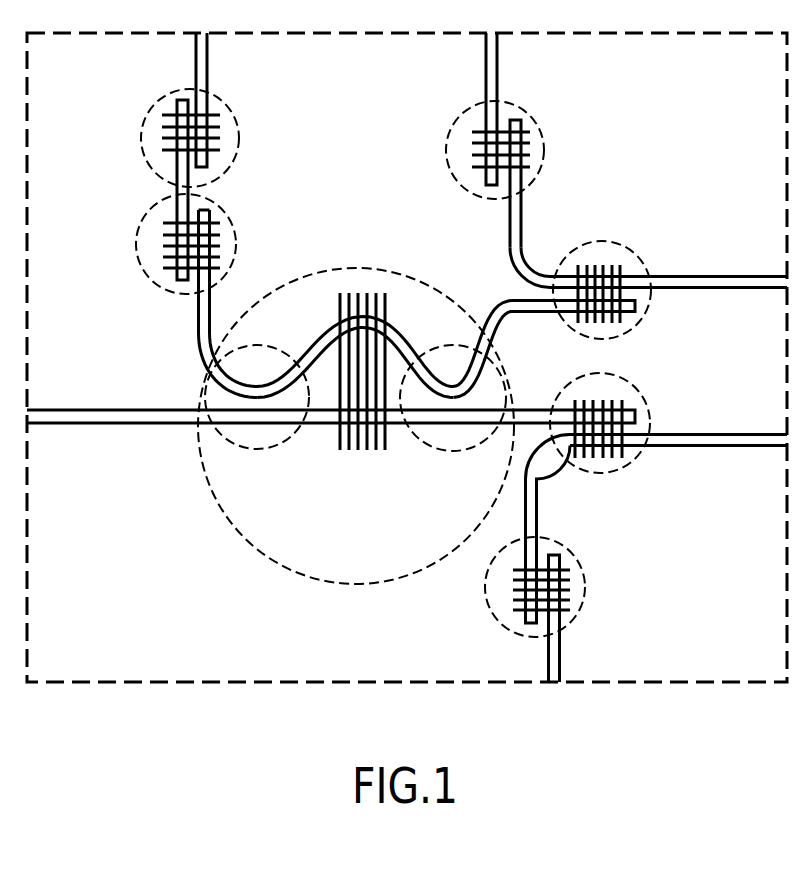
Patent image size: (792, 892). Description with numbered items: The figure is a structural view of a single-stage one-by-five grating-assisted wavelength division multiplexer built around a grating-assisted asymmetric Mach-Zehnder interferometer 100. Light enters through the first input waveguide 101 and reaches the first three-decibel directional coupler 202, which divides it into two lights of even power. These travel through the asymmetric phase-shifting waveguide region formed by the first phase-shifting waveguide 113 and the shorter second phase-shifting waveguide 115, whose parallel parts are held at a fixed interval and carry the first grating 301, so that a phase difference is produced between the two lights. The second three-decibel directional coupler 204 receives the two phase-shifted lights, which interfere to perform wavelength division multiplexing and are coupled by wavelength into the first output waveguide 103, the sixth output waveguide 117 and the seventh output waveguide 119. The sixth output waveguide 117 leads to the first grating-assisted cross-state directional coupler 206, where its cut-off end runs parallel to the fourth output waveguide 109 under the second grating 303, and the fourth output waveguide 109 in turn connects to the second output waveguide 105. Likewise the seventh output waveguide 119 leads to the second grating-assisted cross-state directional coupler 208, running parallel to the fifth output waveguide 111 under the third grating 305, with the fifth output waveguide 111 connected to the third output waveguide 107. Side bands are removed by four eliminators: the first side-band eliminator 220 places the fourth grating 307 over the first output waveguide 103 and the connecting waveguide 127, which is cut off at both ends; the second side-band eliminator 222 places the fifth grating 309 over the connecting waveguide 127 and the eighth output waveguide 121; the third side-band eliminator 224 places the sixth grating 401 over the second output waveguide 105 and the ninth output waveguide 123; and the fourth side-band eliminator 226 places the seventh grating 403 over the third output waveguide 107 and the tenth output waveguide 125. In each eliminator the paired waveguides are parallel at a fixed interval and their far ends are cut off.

The grating-assisted asymmetric Mach-Zehnder interferometer 100 is at (212, 490).
The first input waveguide 101 is at (105, 424).
The first output waveguide 103 is at (197, 333).
The second output waveguide 105 is at (523, 240).
The third output waveguide 107 is at (524, 500).
The fourth output waveguide 109 is at (732, 275).
The fifth output waveguide 111 is at (750, 447).
The first phase-shifting waveguide 113 is at (320, 318).
The second phase-shifting waveguide 115 is at (328, 424).
The sixth output waveguide 117 is at (505, 298).
The seventh output waveguide 119 is at (527, 409).
The eighth output waveguide 121 is at (196, 60).
The ninth output waveguide 123 is at (497, 55).
The tenth output waveguide 125 is at (560, 656).
The connecting waveguide 127 is at (177, 187).
The first 3 dB directional coupler 202 is at (262, 448).
The second 3 dB directional coupler 204 is at (450, 450).
The first grating-assisted cross-state directional coupler 206 is at (637, 303).
The second grating-assisted cross-state directional coupler 208 is at (640, 448).
The first side-band eliminator 220 is at (225, 212).
The second side-band eliminator 222 is at (150, 105).
The third side-band eliminator 224 is at (550, 142).
The fourth side-band eliminator 226 is at (585, 583).
The first grating 301 is at (353, 290).
The second grating 303 is at (605, 265).
The third grating 305 is at (600, 458).
The fourth grating 307 is at (163, 266).
The fifth grating 309 is at (162, 120).
The sixth grating 401 is at (473, 130).
The seventh grating 403 is at (513, 594).